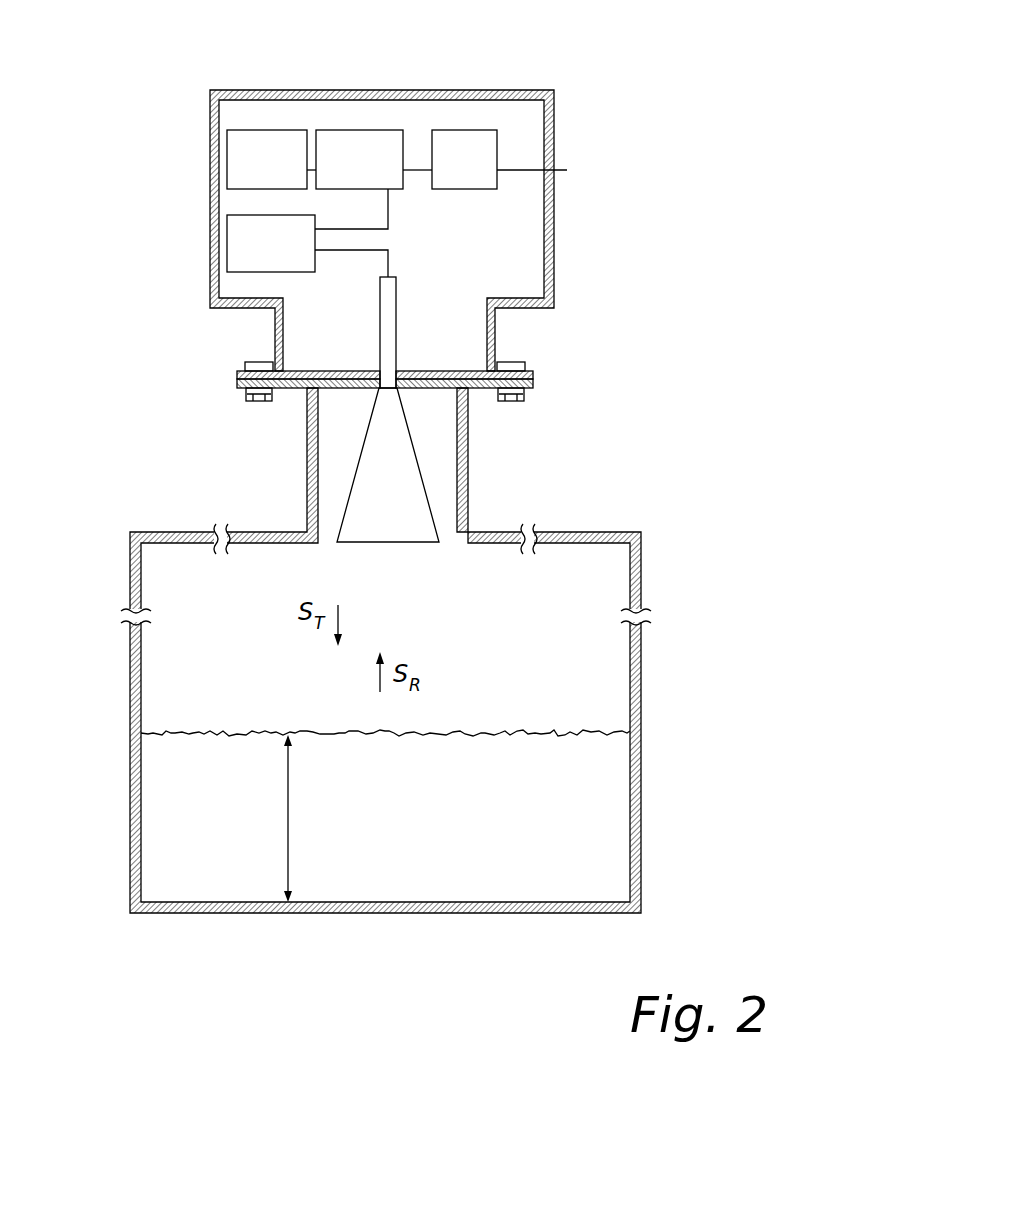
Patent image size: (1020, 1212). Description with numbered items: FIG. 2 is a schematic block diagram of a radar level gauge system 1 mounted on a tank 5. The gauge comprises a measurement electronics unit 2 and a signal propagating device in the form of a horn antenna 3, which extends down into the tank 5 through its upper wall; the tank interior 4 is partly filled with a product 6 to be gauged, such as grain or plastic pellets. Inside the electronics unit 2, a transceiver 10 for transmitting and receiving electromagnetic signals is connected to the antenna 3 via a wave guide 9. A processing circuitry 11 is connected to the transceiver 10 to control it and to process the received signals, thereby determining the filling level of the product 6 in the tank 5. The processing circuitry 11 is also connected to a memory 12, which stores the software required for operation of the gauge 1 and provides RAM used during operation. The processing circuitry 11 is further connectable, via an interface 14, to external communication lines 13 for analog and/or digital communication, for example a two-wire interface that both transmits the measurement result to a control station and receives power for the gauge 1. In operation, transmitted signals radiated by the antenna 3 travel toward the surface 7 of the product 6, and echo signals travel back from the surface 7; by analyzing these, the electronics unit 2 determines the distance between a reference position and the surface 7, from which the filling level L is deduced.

The radar level gauge system 1 is at (632, 288).
The measurement electronics unit 2 is at (300, 89).
The horn antenna 3 is at (436, 523).
The tank 4 is at (207, 612).
The tank 5 is at (563, 533).
The product 6 is at (566, 843).
The surface 7 is at (595, 731).
The wave guide 9 is at (388, 268).
The transceiver 10 is at (227, 248).
The processing circuitry 11 is at (372, 130).
The memory 12 is at (227, 167).
The external communication lines 13 is at (560, 171).
The interface 14 is at (463, 130).